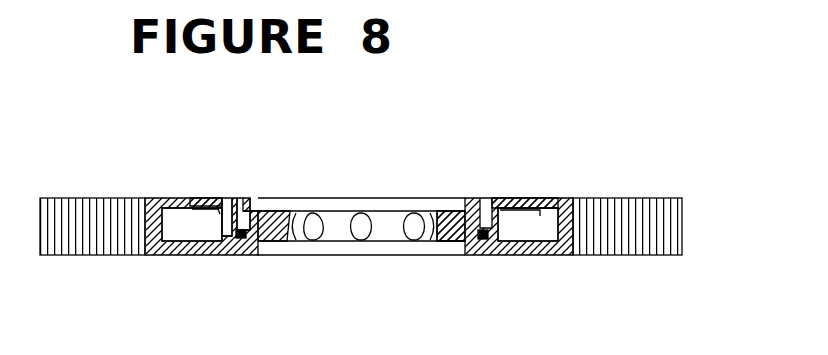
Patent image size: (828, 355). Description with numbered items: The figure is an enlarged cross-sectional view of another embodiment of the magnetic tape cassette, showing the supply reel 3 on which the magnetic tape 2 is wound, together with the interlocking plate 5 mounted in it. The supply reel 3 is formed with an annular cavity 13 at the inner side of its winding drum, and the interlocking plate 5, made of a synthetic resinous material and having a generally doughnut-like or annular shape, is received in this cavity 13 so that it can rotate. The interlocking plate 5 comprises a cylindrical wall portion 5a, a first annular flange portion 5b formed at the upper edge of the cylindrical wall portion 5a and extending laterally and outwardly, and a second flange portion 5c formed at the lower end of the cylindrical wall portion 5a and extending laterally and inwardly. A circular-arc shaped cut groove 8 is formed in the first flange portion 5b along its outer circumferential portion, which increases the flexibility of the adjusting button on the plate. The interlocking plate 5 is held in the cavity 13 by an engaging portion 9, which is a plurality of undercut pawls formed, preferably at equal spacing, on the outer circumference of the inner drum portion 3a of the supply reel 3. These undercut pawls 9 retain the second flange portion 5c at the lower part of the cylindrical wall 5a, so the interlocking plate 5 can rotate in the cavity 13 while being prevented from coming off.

The magnetic tape 2 is at (672, 226).
The supply reel 3 is at (530, 252).
The inner drum portion 3a is at (462, 198).
The interlocking plate 5 is at (504, 196).
The cylindrical wall portion 5a is at (545, 212).
The first annular flange portion 5b is at (192, 214).
The second flange portion 5c is at (484, 239).
The cut groove 8 is at (224, 199).
The engaging portion 9 is at (242, 226).
The annular cavity 13 is at (207, 228).